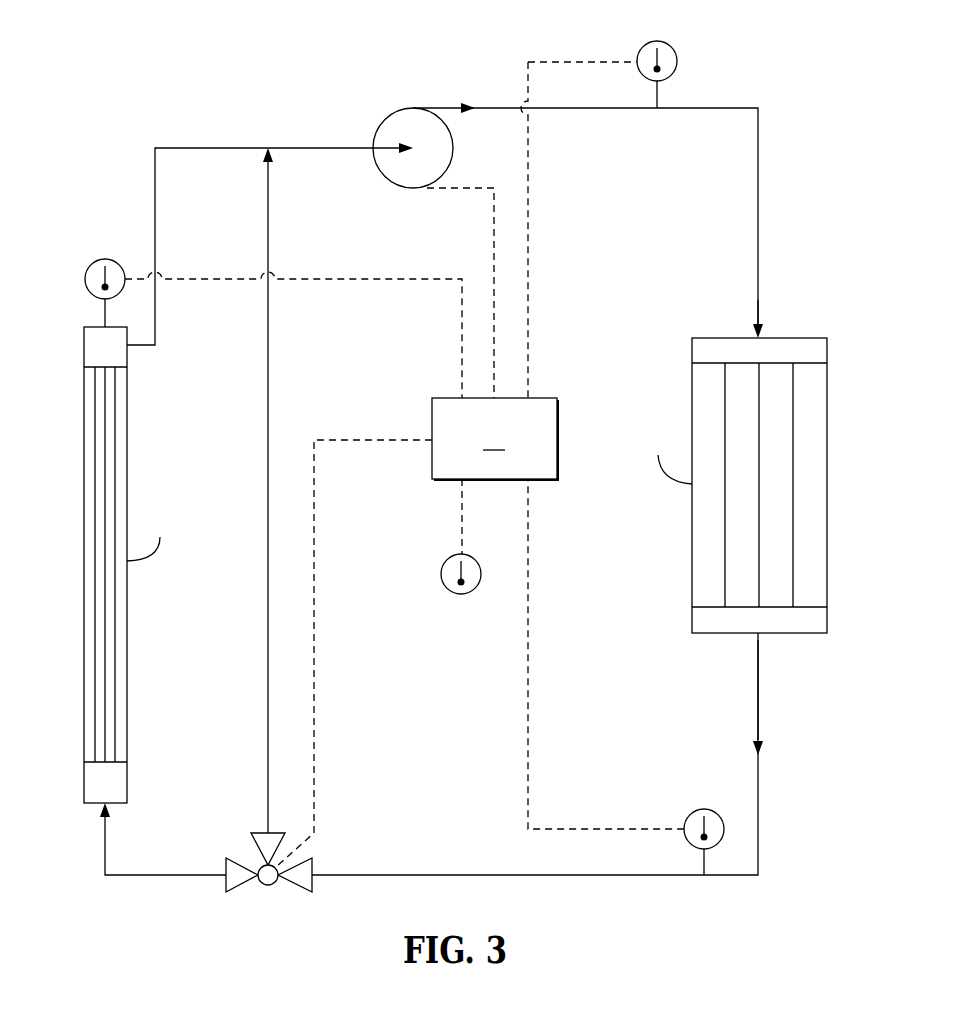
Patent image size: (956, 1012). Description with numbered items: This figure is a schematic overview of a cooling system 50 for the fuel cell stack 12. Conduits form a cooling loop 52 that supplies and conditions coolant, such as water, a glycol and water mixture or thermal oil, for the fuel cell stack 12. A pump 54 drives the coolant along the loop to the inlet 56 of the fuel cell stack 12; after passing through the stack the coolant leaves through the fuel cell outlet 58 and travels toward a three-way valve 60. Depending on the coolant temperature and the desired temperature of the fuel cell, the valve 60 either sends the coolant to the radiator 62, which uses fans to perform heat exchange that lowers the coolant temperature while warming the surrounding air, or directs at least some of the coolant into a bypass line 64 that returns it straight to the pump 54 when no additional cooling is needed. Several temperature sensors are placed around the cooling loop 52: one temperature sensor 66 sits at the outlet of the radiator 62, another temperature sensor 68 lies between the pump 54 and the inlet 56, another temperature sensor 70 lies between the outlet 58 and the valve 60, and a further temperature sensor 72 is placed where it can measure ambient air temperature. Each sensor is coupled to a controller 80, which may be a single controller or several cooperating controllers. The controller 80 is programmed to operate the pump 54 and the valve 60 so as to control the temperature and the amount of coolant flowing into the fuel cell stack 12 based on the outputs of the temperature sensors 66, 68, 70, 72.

The cooling system 50 is at (186, 80).
The cooling loop 52 is at (510, 873).
The pump 54 is at (391, 115).
The inlet 56 is at (762, 338).
The fuel cell outlet 58 is at (760, 633).
The three-way valve 60 is at (268, 886).
The radiator 62 is at (127, 468).
The bypass line 64 is at (270, 380).
The temperature sensor 66 is at (85, 280).
The temperature sensor 68 is at (678, 61).
The temperature sensor 70 is at (690, 815).
The temperature sensor 72 is at (441, 574).
The controller 80 is at (404, 464).
The fuel cell stack 12 is at (828, 455).